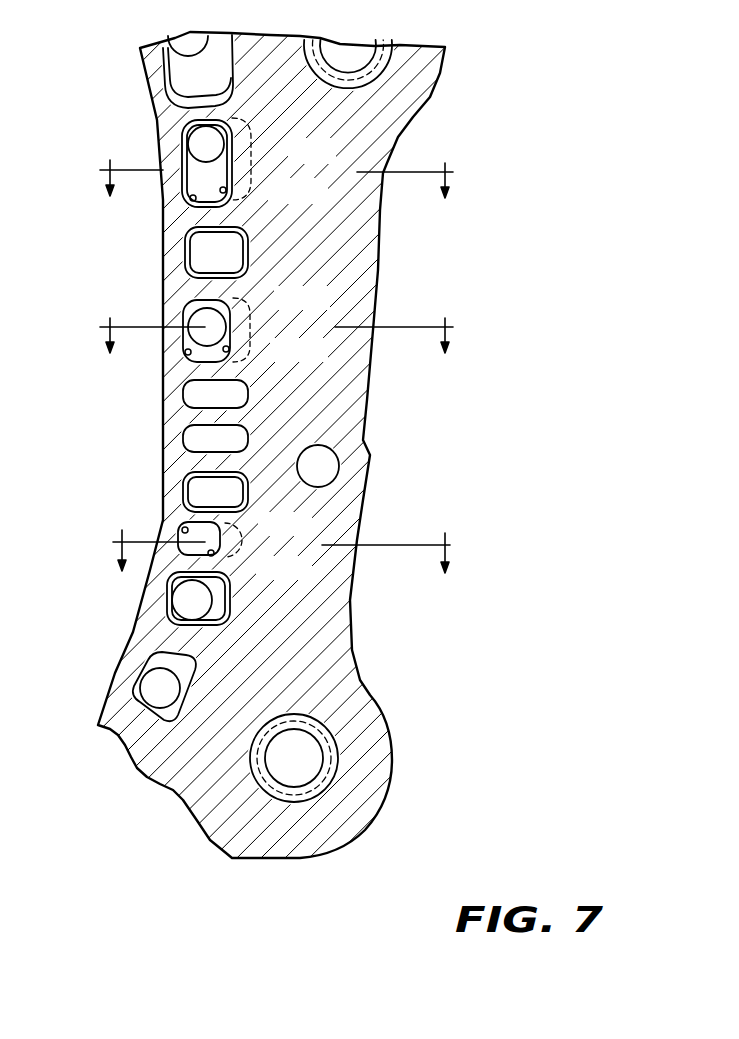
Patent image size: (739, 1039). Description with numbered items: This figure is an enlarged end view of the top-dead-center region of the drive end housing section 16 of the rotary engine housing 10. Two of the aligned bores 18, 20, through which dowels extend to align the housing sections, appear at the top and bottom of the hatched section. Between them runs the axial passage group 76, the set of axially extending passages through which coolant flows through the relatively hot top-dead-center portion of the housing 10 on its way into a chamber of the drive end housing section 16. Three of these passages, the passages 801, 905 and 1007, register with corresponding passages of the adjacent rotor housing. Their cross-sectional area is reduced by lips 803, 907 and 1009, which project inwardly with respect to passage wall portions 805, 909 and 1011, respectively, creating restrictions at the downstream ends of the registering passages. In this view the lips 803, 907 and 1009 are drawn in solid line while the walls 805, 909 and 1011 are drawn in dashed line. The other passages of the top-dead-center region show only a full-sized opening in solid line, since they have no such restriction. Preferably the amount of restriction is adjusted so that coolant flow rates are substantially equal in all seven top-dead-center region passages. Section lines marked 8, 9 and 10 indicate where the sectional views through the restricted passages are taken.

The drive end housing section 16 is at (377, 270).
The bore 18 is at (369, 62).
The bore 20 is at (336, 760).
The axial passage group 76 is at (117, 120).
The passage 1007 is at (185, 208).
The lip 1009 is at (226, 191).
The passage wall portion 1011 is at (250, 162).
The passage 905 is at (185, 352).
The lip 907 is at (229, 351).
The passage wall portion 909 is at (249, 307).
The passage 801 is at (186, 532).
The lip 803 is at (213, 554).
The passage wall portion 805 is at (233, 525).
The housing 10 is at (278, 194).
The section line 9- 9 is at (276, 354).
The section line 8- 8 is at (281, 571).